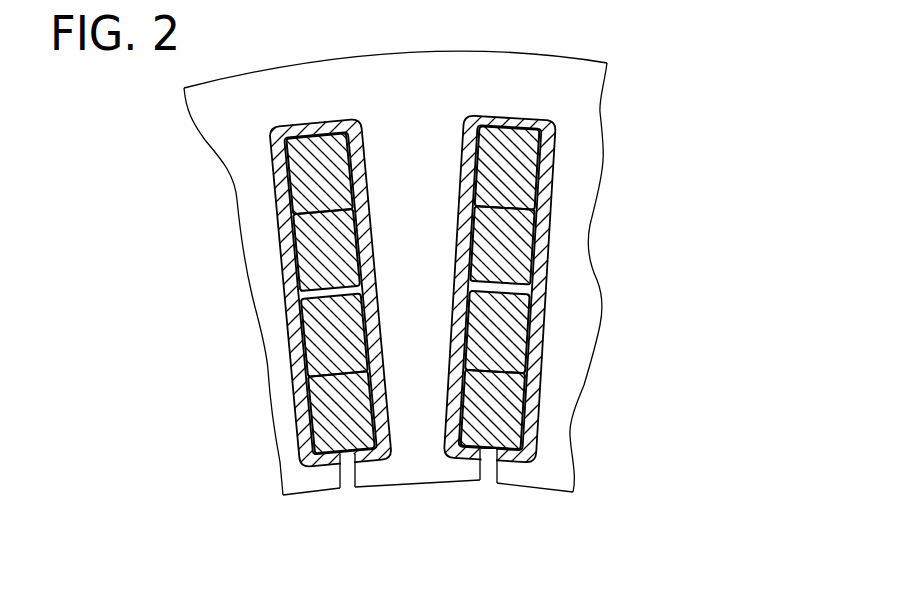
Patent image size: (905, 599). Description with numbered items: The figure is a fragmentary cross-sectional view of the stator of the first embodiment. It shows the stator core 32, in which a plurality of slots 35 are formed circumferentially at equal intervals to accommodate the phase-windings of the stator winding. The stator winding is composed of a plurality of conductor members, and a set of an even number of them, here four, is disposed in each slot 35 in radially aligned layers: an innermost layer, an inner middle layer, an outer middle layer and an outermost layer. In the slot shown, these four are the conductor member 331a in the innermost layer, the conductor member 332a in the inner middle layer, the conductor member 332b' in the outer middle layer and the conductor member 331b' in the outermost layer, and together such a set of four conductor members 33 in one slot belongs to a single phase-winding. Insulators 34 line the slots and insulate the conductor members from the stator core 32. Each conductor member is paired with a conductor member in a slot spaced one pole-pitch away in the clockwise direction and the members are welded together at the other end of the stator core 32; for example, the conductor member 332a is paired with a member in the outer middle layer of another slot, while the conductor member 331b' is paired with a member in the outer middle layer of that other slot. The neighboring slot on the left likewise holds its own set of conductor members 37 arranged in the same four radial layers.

The stator core 32 is at (402, 68).
The stator coil 33 is at (452, 295).
The insulator 34 is at (560, 128).
The slot 35 is at (492, 463).
The conductor segments of coil in adjacent slot 37 is at (280, 182).
The conductor member 331a is at (717, 128).
The conductor member 331b' is at (452, 295).
The conductor member 332a is at (513, 327).
The conductor member 332b' is at (452, 295).